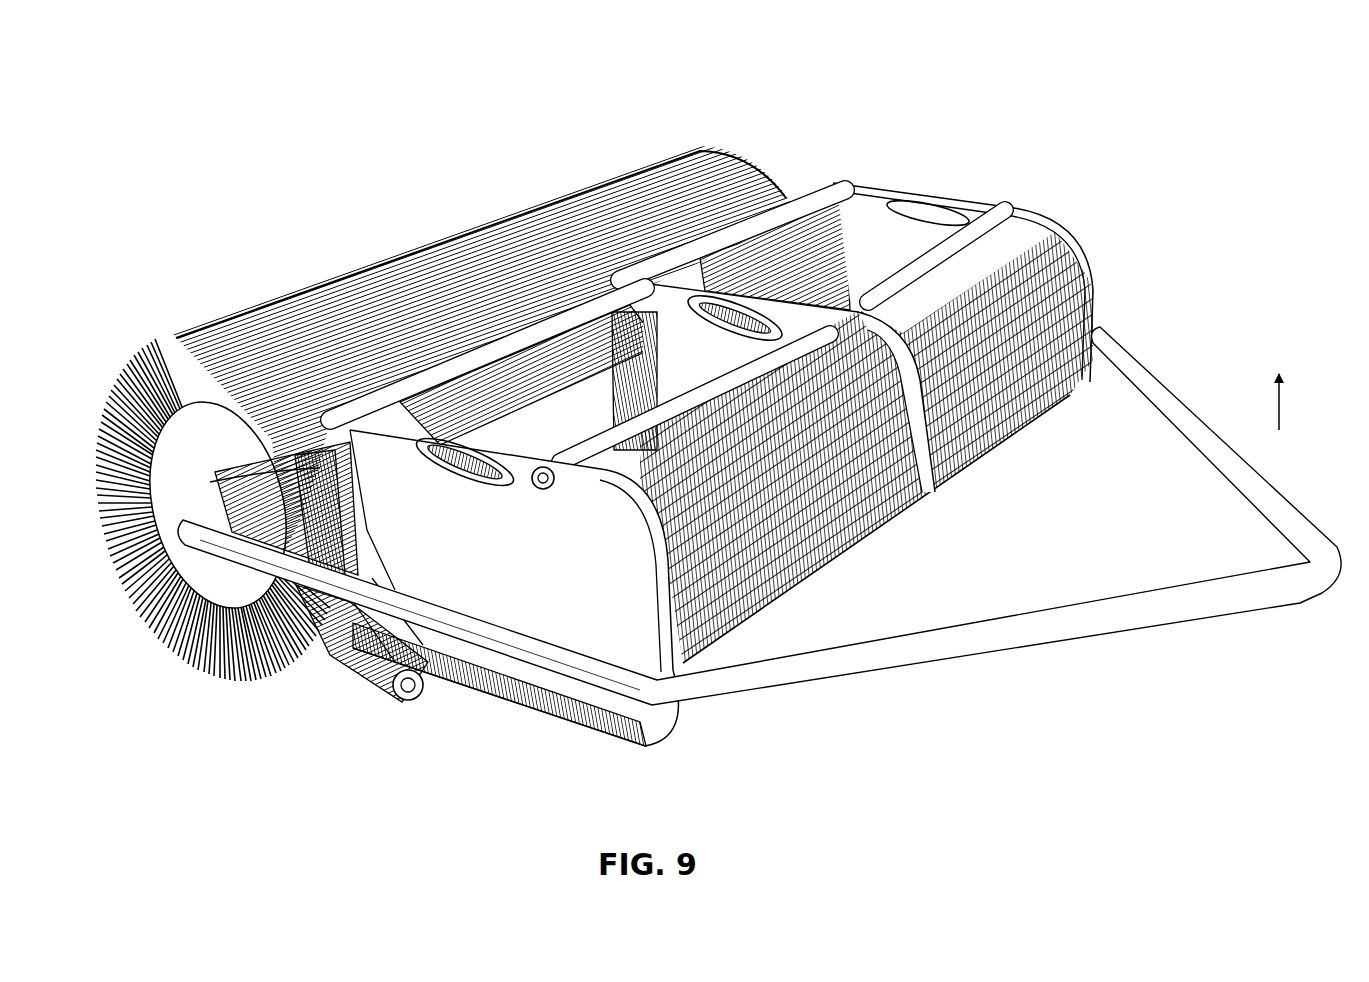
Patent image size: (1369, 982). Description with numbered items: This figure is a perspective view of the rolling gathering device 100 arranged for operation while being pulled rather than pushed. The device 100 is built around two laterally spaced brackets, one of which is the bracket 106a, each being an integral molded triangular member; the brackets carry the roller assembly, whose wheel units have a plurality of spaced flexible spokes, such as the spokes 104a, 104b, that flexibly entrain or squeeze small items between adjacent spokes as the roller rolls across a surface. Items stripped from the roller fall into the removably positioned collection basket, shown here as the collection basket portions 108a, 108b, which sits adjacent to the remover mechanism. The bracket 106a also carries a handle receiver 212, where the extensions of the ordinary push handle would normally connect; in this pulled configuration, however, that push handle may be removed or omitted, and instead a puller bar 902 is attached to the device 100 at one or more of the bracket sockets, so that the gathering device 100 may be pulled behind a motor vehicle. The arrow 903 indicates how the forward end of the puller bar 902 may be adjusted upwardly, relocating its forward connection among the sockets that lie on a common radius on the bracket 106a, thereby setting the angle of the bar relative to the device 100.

The gathering device 100 is at (704, 420).
The spoke 104a is at (263, 289).
The spoke 104b is at (543, 186).
The bracket 106a is at (381, 682).
The collection basket 108a is at (651, 746).
The collection basket 108b is at (1024, 203).
The handle receiver 212 is at (212, 497).
The puller bar 902 is at (948, 637).
The arrow 903 is at (1280, 398).